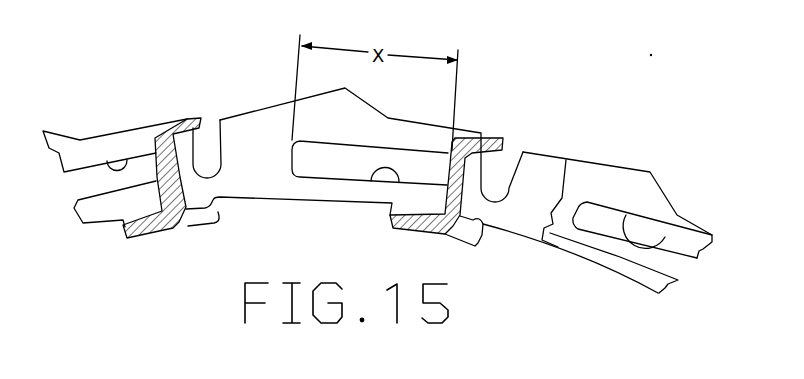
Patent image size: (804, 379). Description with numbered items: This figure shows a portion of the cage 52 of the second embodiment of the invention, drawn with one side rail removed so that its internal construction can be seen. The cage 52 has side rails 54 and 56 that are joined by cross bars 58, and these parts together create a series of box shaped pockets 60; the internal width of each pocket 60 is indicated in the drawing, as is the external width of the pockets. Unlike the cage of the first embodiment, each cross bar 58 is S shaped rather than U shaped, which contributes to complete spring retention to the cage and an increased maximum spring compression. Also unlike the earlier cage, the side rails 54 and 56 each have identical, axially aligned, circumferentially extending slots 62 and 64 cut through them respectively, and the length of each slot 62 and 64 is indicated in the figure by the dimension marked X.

The cage 52 is at (212, 106).
The side rail 54 is at (543, 172).
The side rail 56 is at (615, 185).
The cross bar 58 is at (168, 175).
The pocket 60 is at (265, 138).
The slot 62 is at (122, 152).
The slot 64 is at (664, 238).